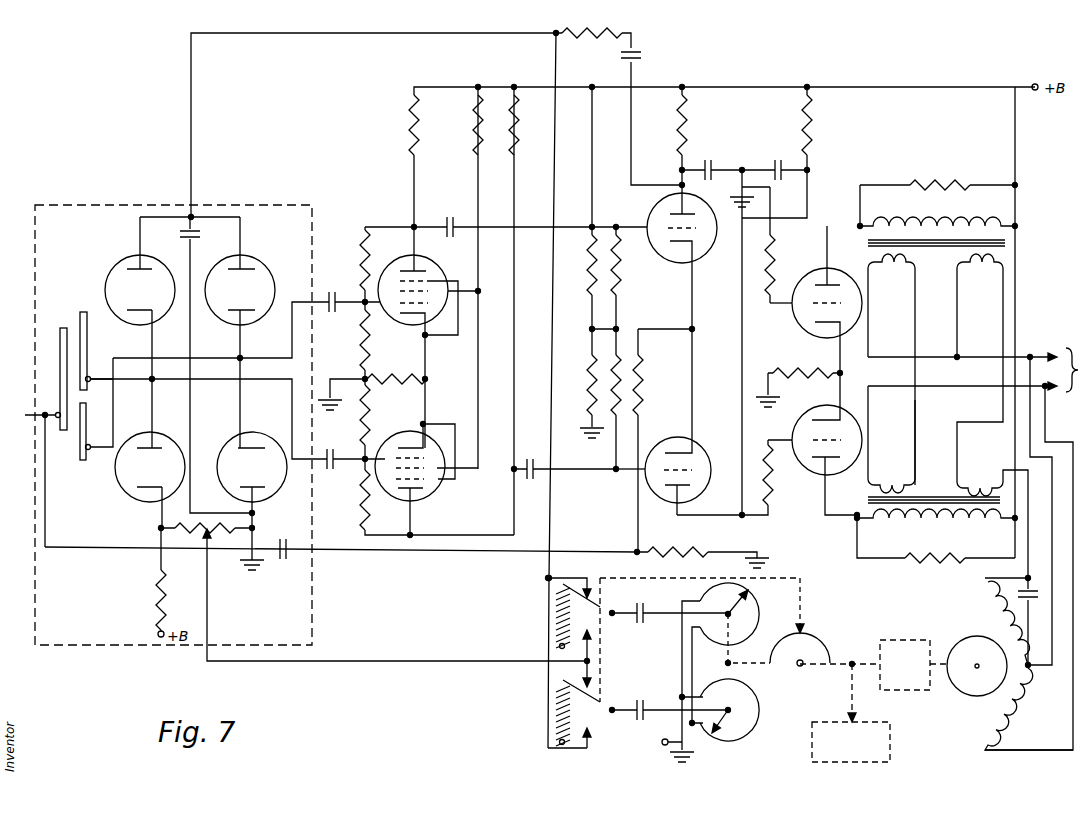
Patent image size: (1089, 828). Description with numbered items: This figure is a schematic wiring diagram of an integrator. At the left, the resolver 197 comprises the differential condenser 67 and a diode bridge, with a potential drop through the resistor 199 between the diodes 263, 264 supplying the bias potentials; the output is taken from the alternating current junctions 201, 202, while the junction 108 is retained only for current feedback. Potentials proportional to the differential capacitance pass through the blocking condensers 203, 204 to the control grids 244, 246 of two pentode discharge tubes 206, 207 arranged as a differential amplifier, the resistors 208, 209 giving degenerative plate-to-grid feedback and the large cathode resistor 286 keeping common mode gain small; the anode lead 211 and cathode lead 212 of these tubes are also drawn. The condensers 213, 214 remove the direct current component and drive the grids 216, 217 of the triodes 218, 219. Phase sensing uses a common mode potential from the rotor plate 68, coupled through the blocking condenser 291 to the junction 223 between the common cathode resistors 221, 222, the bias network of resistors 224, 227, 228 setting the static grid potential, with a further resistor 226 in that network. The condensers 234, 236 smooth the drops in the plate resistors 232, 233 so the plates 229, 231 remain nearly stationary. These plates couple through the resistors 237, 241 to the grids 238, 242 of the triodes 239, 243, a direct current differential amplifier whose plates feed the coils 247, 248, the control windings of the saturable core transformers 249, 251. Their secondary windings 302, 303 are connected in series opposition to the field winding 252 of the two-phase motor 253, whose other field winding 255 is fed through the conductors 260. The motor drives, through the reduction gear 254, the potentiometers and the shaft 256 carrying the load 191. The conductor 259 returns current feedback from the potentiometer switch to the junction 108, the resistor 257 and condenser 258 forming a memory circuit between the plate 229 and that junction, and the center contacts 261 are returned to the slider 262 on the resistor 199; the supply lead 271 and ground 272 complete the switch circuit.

The resolver 197 is at (173, 415).
The junction 108 is at (191, 217).
The differential condenser 67 is at (78, 288).
The rotor plate 68 is at (60, 372).
The alternating current junction 201 is at (241, 358).
The alternating current junction 202 is at (160, 380).
The diode 263 is at (150, 453).
The diode 264 is at (283, 428).
The resistor 199 is at (238, 532).
The slider 262 is at (207, 580).
The blocking condenser 291 is at (290, 558).
The coil 247 is at (385, 554).
The blocking condenser 203 is at (345, 296).
The blocking condenser 204 is at (340, 470).
The resistor 208 is at (362, 252).
The control grid 244 is at (368, 322).
The control grid 246 is at (374, 455).
The resistor 209 is at (362, 510).
The cathode resistor 286 is at (372, 382).
The pentode discharge tube 206 is at (402, 268).
The anode lead 211 is at (404, 232).
The condenser 213 is at (460, 218).
The cathode lead 212 is at (412, 495).
The pentode discharge tube 207 is at (442, 490).
The condenser 214 is at (532, 482).
The resistor 257 is at (600, 42).
The condenser 258 is at (641, 55).
The plate resistor 232 is at (678, 130).
The condenser 234 is at (724, 160).
The condenser 236 is at (775, 160).
The plate resistor 233 is at (810, 128).
The grid 216 is at (648, 228).
The plate 229 is at (664, 206).
The triode 218 is at (698, 250).
The resistor 224 is at (590, 290).
The resistor 227 is at (620, 285).
The resistor 228 is at (620, 348).
The resistor 226 is at (590, 345).
The cathode resistor 221 is at (642, 362).
The resistor 237 is at (773, 255).
The triode 239 is at (860, 265).
The grid 238 is at (793, 306).
The triode 243 is at (778, 378).
The grid 242 is at (793, 438).
The resistor 241 is at (771, 505).
The triode 219 is at (733, 440).
The grid 217 is at (645, 478).
The plate 231 is at (690, 488).
The conductor 259 is at (550, 530).
The junction 223 is at (636, 550).
The cathode resistor 222 is at (656, 546).
The saturable core transformer 249 is at (950, 276).
The secondary winding 302 is at (996, 272).
The saturable core transformer 251 is at (948, 476).
The secondary winding 303 is at (1000, 475).
The coil 248 is at (906, 533).
The conductors 260 is at (1040, 356).
The field winding 252 is at (985, 608).
The two-phase motor 253 is at (964, 684).
The reduction gear 254 is at (910, 640).
The load 191 is at (858, 764).
The field winding 255 is at (1015, 708).
The shaft 256 is at (755, 668).
The center contacts 261 is at (590, 652).
The supply lead 271 is at (682, 728).
The ground 272 is at (692, 750).